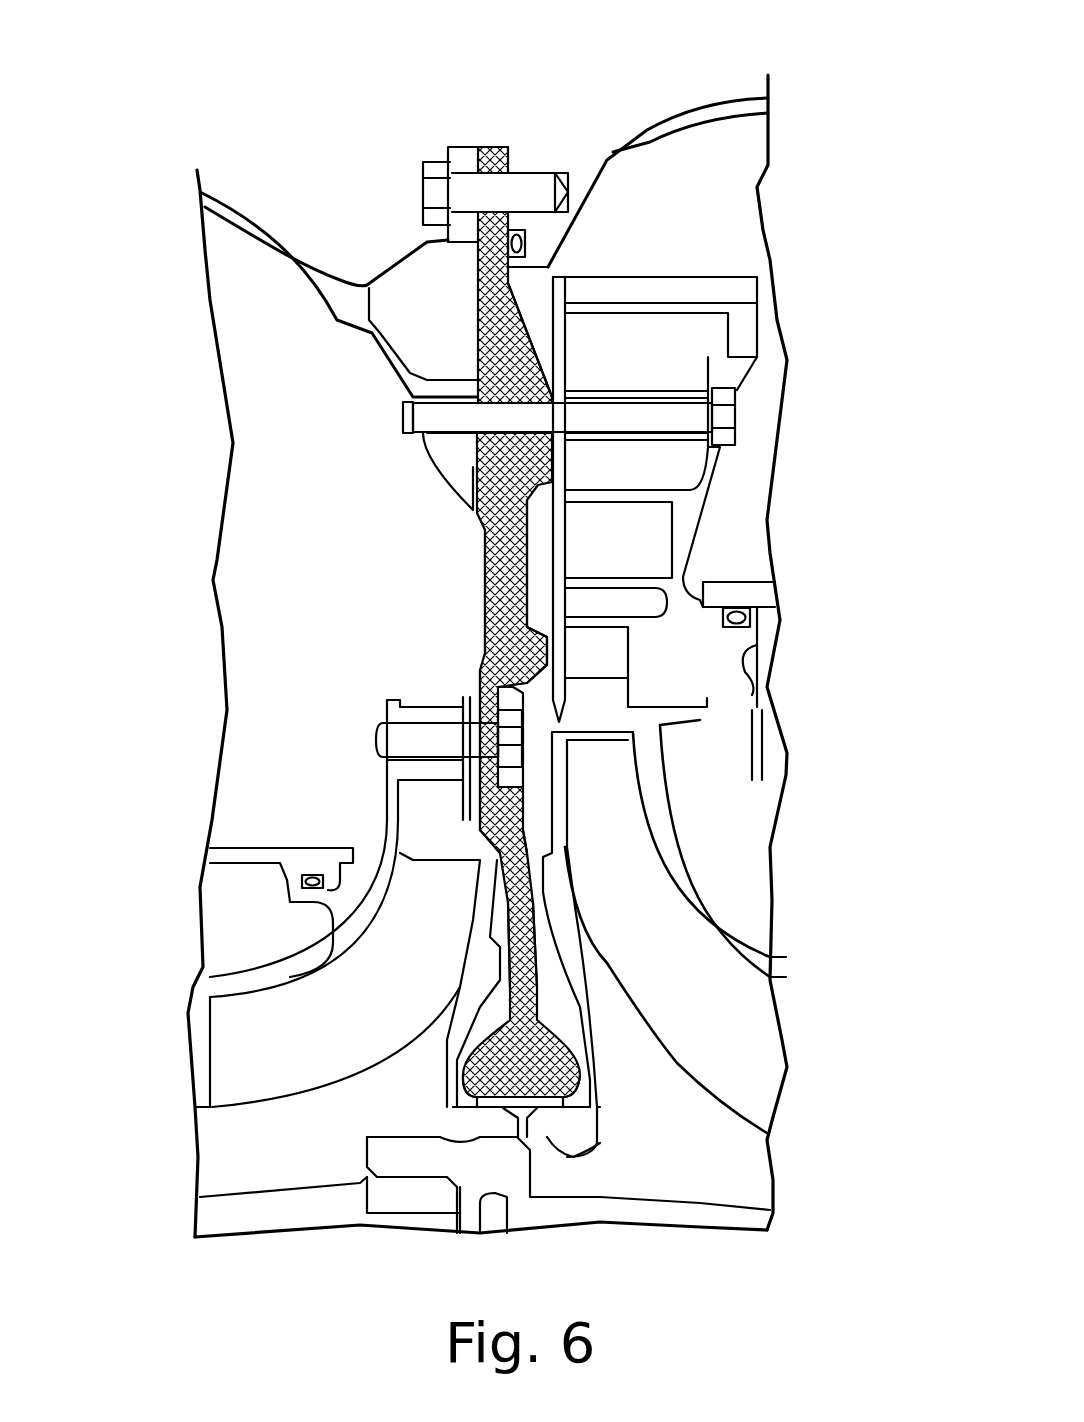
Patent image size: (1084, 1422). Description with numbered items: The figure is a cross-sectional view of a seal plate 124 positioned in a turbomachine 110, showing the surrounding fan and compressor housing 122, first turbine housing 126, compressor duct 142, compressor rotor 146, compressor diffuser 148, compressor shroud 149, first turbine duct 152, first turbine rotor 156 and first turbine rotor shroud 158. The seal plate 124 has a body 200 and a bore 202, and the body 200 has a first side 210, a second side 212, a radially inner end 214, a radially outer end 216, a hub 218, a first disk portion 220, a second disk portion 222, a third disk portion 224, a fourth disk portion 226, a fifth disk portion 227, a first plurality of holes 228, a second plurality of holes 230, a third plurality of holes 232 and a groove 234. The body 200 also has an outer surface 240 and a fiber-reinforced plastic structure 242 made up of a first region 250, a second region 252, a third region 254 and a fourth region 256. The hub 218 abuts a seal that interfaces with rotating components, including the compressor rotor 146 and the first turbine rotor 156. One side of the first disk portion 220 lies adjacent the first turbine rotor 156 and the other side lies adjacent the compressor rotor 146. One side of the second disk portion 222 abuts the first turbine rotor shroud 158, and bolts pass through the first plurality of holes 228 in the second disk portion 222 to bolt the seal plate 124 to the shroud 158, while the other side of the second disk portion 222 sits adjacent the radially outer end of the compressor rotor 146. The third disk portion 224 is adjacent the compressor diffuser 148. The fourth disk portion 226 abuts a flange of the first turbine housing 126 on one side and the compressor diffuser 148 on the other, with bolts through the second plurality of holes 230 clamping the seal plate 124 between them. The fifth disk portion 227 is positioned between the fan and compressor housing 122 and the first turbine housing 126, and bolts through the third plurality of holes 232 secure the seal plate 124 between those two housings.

The turbomachine 110 is at (162, 102).
The fan and compressor housing 122 is at (731, 107).
The seal plate 124 is at (545, 338).
The first turbine housing 126 is at (255, 223).
The compressor duct 142 is at (698, 211).
The compressor rotor 146 is at (700, 1150).
The compressor diffuser 148 is at (687, 515).
The compressor shroud 149 is at (655, 828).
The first turbine duct 152 is at (176, 703).
The first turbine rotor 156 is at (245, 1153).
The first turbine rotor shroud 158 is at (345, 933).
The body 200 is at (477, 575).
The bore 202 is at (567, 1100).
The first side 210 is at (481, 677).
The second side 212 is at (552, 662).
The radially inner end 214 is at (470, 1107).
The radially outer end 216 is at (485, 147).
The hub 218 is at (577, 1065).
The first disk portion 220 is at (525, 905).
The second disk portion 222 is at (470, 778).
The third disk portion 224 is at (485, 640).
The fourth disk portion 226 is at (477, 337).
The fifth disk portion 227 is at (477, 160).
The first plurality of holes 228 is at (393, 763).
The second plurality of holes 230 is at (477, 460).
The third plurality of holes 232 is at (509, 148).
The groove 234 is at (477, 235).
The outer surface 240 is at (485, 533).
The fiber-reinforced plastic structure 242 is at (528, 607).
The first region 250 is at (463, 1068).
The second region 252 is at (537, 953).
The third region 254 is at (522, 818).
The fourth region 256 is at (527, 540).